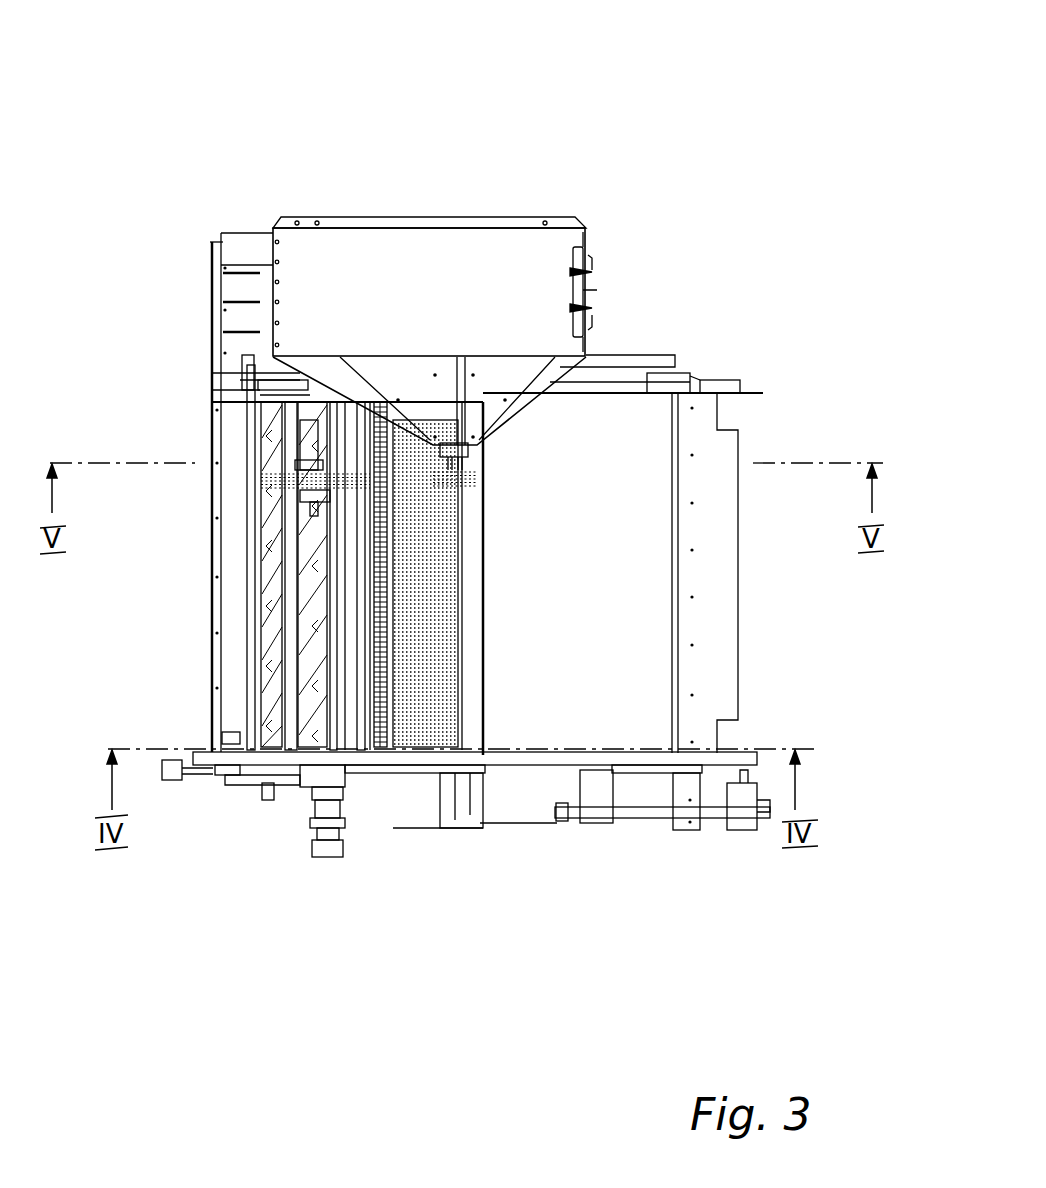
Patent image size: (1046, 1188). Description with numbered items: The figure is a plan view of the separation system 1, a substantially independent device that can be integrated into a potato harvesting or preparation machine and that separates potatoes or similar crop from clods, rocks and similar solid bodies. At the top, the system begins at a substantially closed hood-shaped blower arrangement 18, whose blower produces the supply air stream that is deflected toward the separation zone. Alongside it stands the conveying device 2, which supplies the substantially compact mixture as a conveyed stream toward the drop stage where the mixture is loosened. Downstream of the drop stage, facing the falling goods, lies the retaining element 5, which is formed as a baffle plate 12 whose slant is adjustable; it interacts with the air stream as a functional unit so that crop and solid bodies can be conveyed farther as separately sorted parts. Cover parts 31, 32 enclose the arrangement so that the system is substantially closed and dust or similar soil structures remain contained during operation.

The separation system 1 is at (698, 152).
The conveying device 2 is at (241, 582).
The retaining element 5 is at (451, 536).
The baffle plate 12 is at (452, 612).
The hood-shaped blower arrangement 18 is at (349, 245).
The cover part 31 is at (210, 662).
The cover part 32 is at (641, 490).